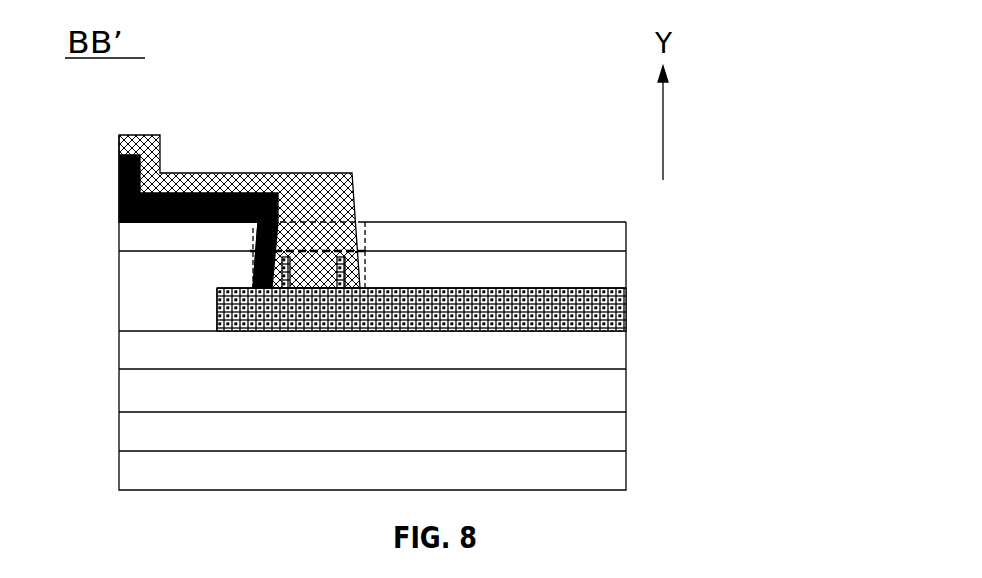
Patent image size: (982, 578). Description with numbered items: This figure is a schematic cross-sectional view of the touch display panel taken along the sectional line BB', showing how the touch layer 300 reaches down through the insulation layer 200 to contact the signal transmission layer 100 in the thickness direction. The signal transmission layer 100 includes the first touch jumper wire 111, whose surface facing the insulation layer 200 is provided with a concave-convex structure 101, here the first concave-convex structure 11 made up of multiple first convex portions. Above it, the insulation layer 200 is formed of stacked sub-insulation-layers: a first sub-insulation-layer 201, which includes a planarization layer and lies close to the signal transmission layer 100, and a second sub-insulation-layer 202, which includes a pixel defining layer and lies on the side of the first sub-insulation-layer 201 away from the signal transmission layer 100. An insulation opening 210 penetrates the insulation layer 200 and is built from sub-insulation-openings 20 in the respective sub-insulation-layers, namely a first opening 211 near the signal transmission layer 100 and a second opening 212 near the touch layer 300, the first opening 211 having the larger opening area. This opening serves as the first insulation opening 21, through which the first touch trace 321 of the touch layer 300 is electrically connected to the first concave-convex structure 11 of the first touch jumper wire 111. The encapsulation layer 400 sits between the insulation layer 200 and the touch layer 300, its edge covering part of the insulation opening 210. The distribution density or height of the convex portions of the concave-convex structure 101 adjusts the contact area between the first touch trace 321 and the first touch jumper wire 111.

The signal transmission layer 100 is at (522, 311).
The first touch jumper wire 111 is at (627, 315).
The concave-convex structure 101 is at (233, 273).
The first concave-convex structure 11 is at (284, 270).
The insulation layer 200 is at (482, 250).
The first sub-insulation-layer 201 is at (627, 270).
The second sub-insulation-layer 202 is at (627, 228).
The sub-insulation-opening 20 is at (387, 255).
The first insulation opening 21 is at (439, 174).
The insulation opening 210 is at (439, 174).
The first opening 211 is at (362, 275).
The second opening 212 is at (362, 237).
The touch layer 300 is at (335, 211).
The first touch trace 321 is at (355, 182).
The encapsulation layer 400 is at (118, 155).